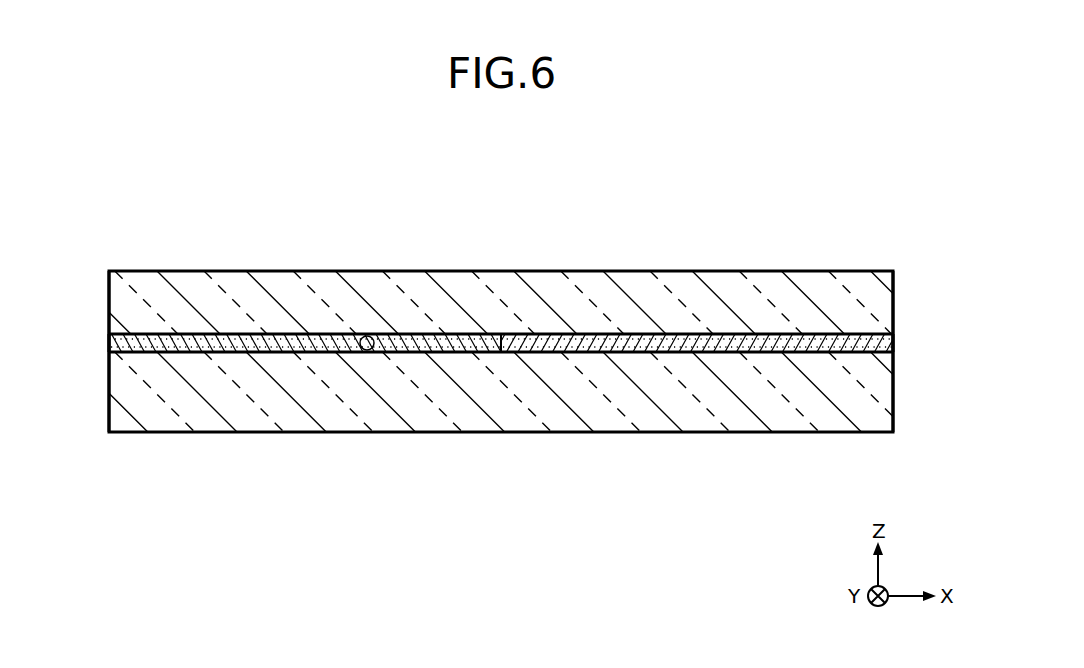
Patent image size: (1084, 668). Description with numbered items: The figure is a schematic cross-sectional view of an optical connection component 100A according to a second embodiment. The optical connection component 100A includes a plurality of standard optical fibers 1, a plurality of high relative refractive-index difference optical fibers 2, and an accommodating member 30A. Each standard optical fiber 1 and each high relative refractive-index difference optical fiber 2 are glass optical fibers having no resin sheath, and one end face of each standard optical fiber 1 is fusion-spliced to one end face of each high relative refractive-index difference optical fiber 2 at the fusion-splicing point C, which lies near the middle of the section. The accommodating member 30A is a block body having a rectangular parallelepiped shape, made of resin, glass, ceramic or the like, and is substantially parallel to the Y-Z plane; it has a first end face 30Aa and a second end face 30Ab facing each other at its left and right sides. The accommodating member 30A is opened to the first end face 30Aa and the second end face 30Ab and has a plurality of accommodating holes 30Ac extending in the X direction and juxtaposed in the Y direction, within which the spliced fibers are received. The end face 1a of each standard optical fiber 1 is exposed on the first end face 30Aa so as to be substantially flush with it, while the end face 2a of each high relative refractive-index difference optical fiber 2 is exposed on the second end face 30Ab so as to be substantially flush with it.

The optical connection component 100A is at (812, 198).
The accommodating member 30A is at (503, 270).
The first end face 30Aa is at (109, 402).
The second end face 30Ab is at (893, 402).
The accommodating hole 30Ac is at (371, 349).
The standard optical fiber 1 is at (305, 333).
The end face of standard optical fiber 1a is at (109, 340).
The high relative refractive-index difference optical fiber 2 is at (688, 333).
The end face of high relative refractive-index difference optical fiber 2a is at (893, 340).
The fusion-splicing point C is at (501, 353).